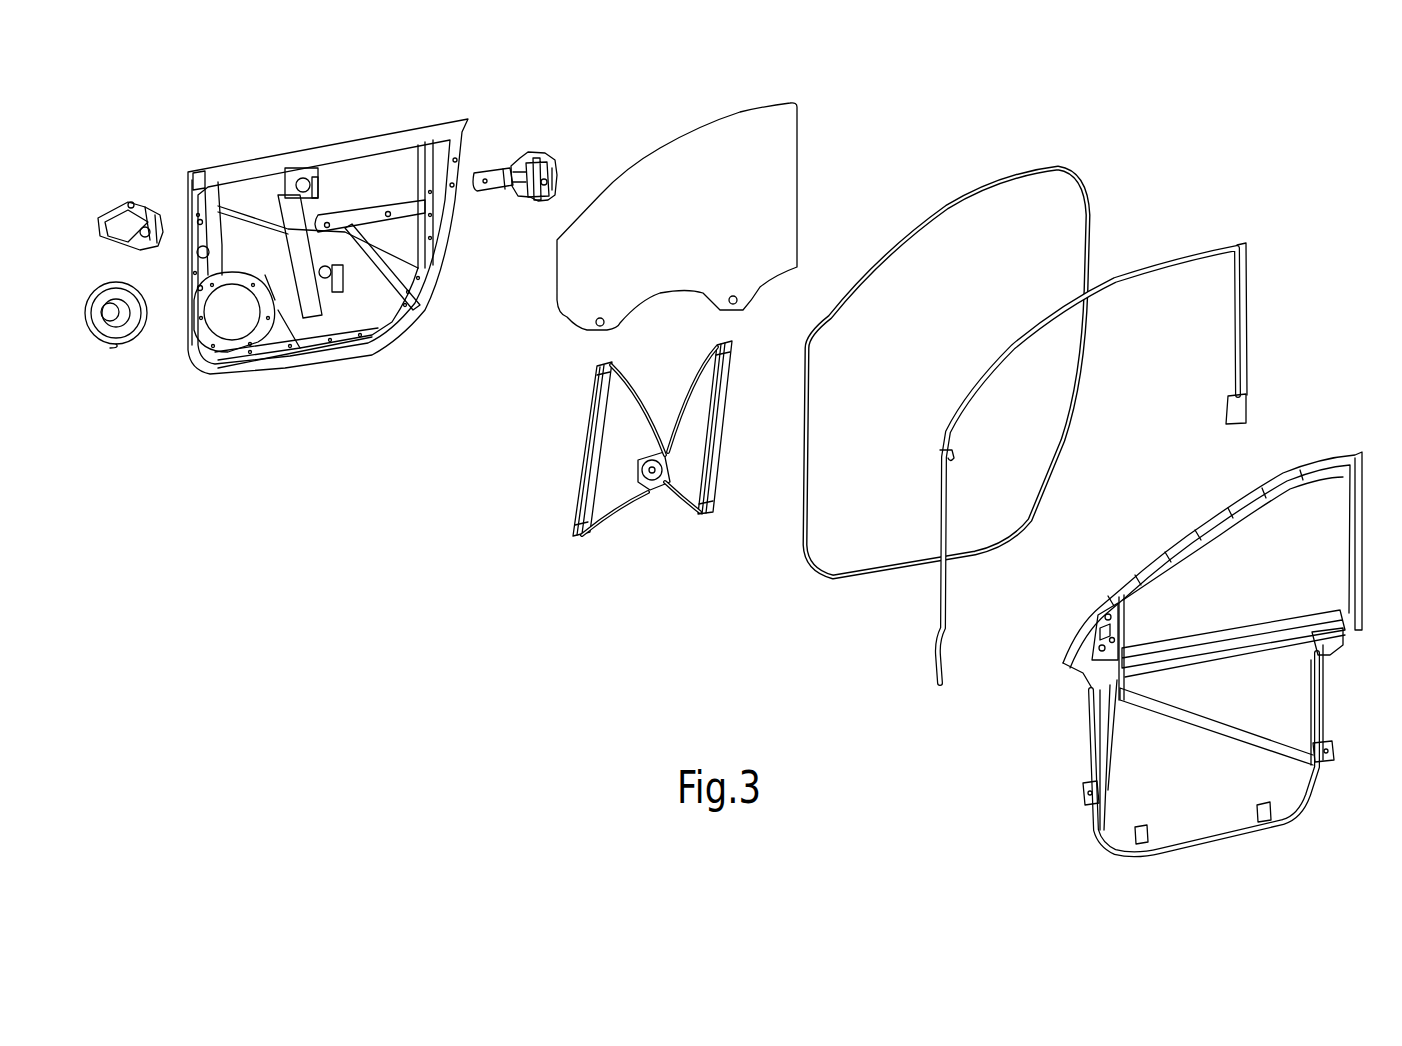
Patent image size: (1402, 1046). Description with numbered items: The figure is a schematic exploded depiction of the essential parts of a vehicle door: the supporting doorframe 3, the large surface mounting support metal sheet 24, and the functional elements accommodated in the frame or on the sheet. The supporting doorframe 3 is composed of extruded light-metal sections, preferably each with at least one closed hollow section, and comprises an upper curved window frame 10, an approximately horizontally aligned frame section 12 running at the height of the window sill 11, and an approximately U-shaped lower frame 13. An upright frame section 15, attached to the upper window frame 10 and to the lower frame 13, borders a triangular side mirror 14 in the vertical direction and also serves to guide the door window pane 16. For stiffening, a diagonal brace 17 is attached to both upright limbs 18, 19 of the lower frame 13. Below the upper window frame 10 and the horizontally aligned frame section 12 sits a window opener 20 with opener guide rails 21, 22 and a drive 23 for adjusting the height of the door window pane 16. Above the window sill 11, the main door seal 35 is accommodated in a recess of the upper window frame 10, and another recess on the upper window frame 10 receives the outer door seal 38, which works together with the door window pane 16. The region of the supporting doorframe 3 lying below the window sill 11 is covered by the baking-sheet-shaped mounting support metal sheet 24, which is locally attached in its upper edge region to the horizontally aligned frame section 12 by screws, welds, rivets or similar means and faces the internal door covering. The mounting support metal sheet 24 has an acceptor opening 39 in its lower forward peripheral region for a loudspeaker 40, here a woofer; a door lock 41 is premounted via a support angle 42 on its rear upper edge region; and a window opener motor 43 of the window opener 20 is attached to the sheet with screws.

The supporting doorframe 3 is at (1087, 114).
The upper curved window frame 10 is at (1283, 470).
The window sill 11 is at (1277, 617).
The horizontally aligned frame section 12 is at (1233, 643).
The lower frame 13 is at (1210, 840).
The triangular side mirror 14 is at (1087, 627).
The upright frame section 15 is at (1122, 613).
The door window pane 16 is at (727, 130).
The diagonal brace 17 is at (1193, 720).
The upright limb 18 is at (1092, 717).
The upright limb 19 is at (1317, 703).
The window opener 20 is at (653, 520).
The opener guide rail 21 is at (592, 450).
The opener guide rail 22 is at (730, 413).
The drive 23 is at (663, 443).
The mounting support metal sheet 24 is at (273, 147).
The main door seal 35 is at (967, 193).
The outer door seal 38 is at (1157, 267).
The acceptor opening 39 is at (227, 323).
The loudspeaker 40 is at (103, 340).
The door lock 41 is at (548, 157).
The support angle 42 is at (495, 173).
The window opener motor 43 is at (128, 200).